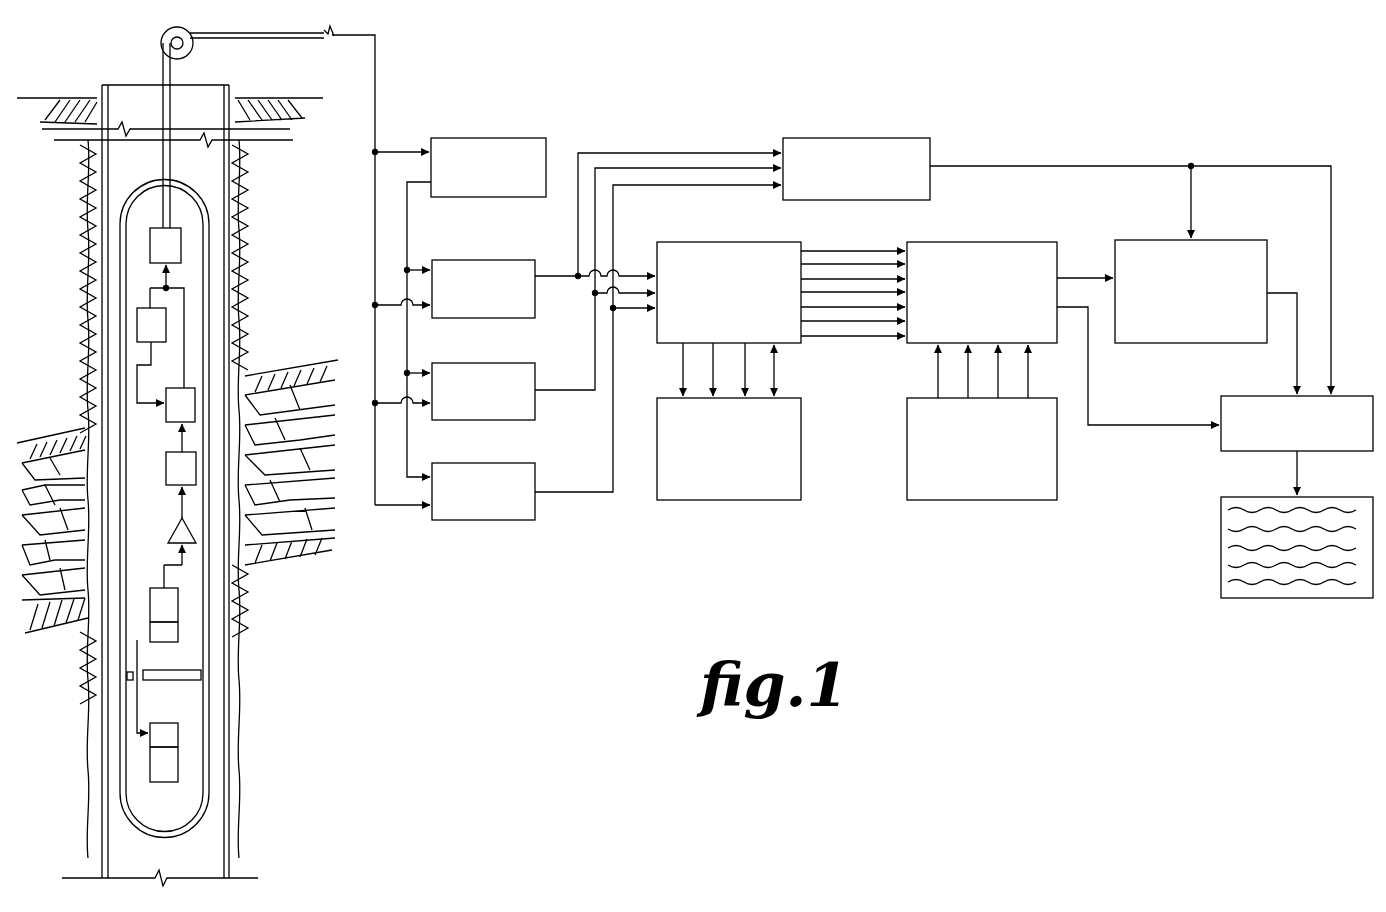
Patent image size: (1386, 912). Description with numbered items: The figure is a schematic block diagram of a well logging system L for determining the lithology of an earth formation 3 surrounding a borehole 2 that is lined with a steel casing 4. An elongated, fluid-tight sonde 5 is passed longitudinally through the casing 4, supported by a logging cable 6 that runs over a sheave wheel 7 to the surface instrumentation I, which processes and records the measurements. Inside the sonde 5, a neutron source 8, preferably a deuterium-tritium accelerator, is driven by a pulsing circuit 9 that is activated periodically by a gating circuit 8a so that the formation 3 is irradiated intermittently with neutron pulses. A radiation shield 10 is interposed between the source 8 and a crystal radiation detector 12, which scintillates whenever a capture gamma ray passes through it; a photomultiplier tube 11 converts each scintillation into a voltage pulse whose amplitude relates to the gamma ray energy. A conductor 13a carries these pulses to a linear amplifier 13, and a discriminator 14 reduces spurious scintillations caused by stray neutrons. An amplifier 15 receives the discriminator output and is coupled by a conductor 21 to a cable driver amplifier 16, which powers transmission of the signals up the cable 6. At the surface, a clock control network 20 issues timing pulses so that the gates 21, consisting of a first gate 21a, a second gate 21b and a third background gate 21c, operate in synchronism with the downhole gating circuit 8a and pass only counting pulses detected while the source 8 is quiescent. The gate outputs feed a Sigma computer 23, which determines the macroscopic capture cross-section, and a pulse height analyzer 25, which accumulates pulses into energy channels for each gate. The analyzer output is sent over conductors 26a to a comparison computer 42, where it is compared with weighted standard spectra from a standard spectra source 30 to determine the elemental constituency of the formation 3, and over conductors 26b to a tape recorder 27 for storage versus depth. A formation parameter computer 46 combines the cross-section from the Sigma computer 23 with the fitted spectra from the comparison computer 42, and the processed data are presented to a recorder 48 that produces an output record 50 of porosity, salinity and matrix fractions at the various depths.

The borehole 2 is at (97, 98).
The earth formation 3 is at (300, 370).
The steel casing 4 is at (230, 262).
The sonde 5 is at (210, 740).
The logging cable 6 is at (240, 36).
The sheave wheel 7 is at (163, 36).
The neutron source 8 is at (172, 770).
The gating circuit 8a is at (148, 330).
The pulsing circuit 9 is at (172, 738).
The radiation shield 10 is at (180, 673).
The photomultiplier tube 11 is at (172, 608).
The radiation detector 12 is at (157, 632).
The linear amplifier 13 is at (190, 533).
The conductor 13a is at (155, 567).
The discriminator 14 is at (172, 465).
The amplifier 15 is at (183, 400).
The cable driver amplifier 16 is at (168, 243).
The surface clock control network 20 is at (476, 138).
The gates 21 is at (184, 318).
The first gate 21a is at (468, 260).
The second gate 21b is at (468, 363).
The third gate 21c is at (468, 463).
The Sigma computer 23 is at (850, 138).
The pulse height analyzer 25 is at (700, 242).
The electrical conductors 26a is at (832, 250).
The plural conductors 26b is at (787, 372).
The tape recorder 27 is at (735, 500).
The standard spectra source 30 is at (995, 500).
The comparison computer 42 is at (972, 242).
The formation parameter computer 46 is at (1212, 240).
The recorder 48 is at (1222, 398).
The output record 50 is at (1228, 550).
The surface instrumentation I is at (638, 102).
The well logging system L is at (310, 602).